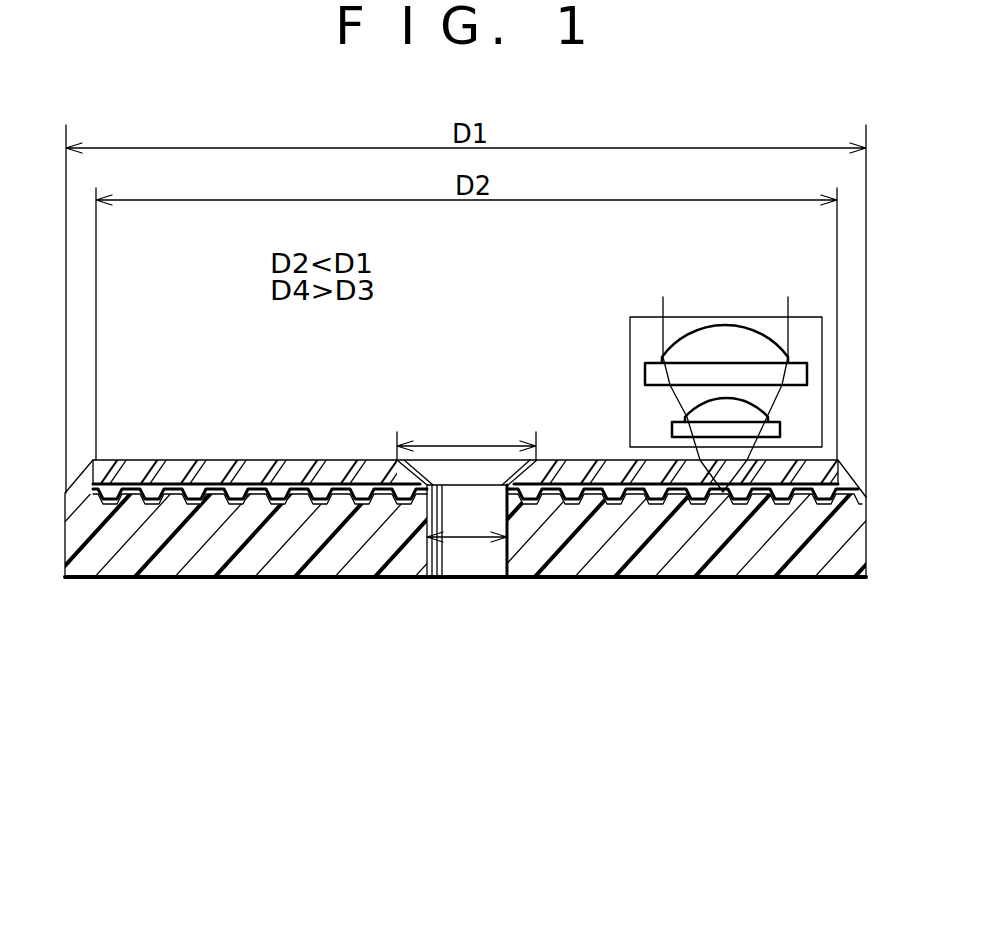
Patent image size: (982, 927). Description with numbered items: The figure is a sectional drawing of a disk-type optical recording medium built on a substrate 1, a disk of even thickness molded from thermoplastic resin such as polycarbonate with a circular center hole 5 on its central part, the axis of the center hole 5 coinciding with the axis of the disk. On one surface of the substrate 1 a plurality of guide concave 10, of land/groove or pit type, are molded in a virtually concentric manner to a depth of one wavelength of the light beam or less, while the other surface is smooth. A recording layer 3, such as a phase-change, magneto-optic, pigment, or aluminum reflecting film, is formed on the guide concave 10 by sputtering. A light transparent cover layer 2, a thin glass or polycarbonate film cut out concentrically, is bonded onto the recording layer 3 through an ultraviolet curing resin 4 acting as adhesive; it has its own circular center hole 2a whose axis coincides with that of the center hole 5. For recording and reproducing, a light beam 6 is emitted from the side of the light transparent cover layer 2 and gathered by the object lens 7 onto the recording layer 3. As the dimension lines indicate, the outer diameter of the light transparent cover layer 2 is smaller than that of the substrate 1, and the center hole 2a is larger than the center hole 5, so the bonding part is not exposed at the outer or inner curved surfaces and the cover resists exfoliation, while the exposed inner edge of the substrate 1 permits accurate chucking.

The substrate 1 is at (582, 553).
The light transparent cover layer 2 is at (155, 467).
The center hole 2a is at (407, 467).
The recording layer 3 is at (235, 492).
The ultraviolet curing resin 4 is at (650, 492).
The center hole 5 is at (428, 553).
The light beam 6 is at (665, 326).
The object lens 7 is at (630, 367).
The guide concave 10 is at (183, 502).